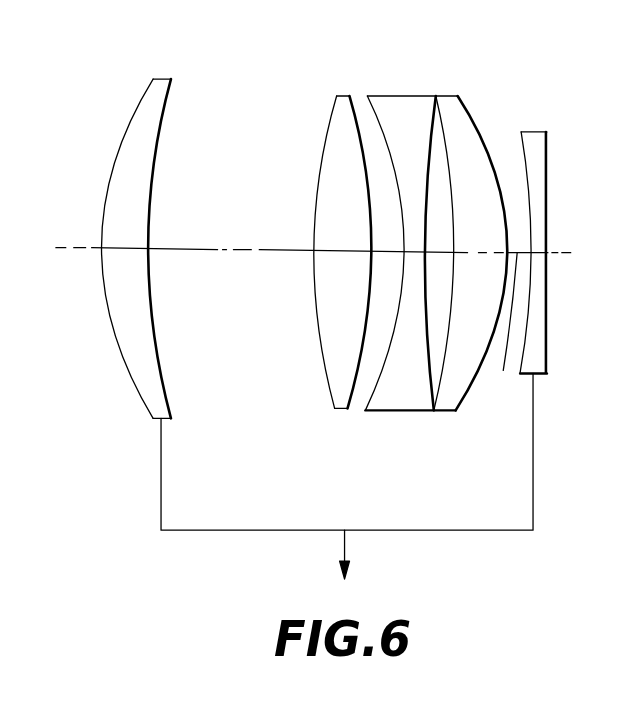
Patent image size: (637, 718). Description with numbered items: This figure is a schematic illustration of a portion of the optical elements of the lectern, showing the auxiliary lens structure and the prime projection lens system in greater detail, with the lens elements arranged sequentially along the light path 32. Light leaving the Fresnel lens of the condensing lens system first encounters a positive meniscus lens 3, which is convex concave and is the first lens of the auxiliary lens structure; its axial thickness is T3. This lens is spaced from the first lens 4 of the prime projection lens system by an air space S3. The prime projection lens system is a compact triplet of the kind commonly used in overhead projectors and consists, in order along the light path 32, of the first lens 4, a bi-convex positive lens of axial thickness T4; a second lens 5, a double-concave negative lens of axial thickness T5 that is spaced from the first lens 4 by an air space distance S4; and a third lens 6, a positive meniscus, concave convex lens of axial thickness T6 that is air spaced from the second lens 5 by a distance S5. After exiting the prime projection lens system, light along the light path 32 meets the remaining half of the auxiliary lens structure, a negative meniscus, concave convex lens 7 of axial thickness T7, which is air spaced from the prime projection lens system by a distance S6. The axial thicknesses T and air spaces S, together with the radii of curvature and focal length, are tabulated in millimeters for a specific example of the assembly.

The positive meniscus lens 3 is at (158, 90).
The first lens 4 is at (340, 105).
The second lens 5 is at (405, 102).
The third lens 6 is at (455, 100).
The negative meniscus lens 7 is at (540, 135).
The light path 32 is at (50, 243).
The axial thickness of lens 3 T3 is at (121, 246).
The axial thickness of lens 4 T4 is at (337, 245).
The axial thickness of lens 5 T5 is at (412, 245).
The axial thickness of lens 6 T6 is at (478, 252).
The axial thickness of lens 7 T7 is at (545, 252).
The air space S3 is at (241, 250).
The air space distance S4 is at (386, 250).
The air space distance S5 is at (440, 248).
The air space distance S6 is at (502, 335).